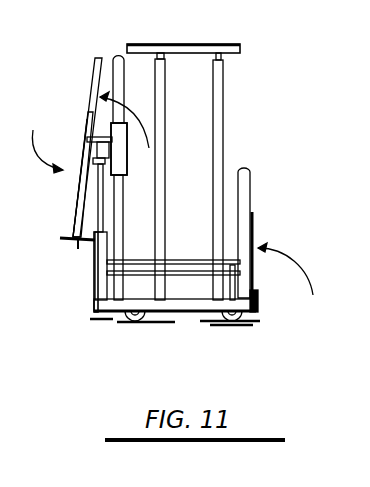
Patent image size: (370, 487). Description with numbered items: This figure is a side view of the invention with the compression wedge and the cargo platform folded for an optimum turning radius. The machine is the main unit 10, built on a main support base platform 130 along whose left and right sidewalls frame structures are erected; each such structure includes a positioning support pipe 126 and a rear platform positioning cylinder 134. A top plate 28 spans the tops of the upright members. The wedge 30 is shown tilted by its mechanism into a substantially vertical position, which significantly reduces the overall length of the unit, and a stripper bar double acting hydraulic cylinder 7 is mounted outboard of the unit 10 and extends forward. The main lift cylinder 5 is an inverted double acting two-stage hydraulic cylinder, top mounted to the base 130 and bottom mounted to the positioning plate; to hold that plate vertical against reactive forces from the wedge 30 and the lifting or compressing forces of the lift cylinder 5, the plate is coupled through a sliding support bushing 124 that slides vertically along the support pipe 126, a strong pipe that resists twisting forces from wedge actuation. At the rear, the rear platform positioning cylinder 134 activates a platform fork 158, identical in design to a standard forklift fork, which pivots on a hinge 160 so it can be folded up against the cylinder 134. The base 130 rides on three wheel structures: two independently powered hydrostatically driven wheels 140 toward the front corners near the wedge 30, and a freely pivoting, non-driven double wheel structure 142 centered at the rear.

The top plate 28 is at (210, 44).
The main unit 10 is at (229, 92).
The positioning support pipe 126 is at (124, 69).
The sliding support bushing 124 is at (127, 160).
The stripper bar double acting hydraulic cylinder 7 is at (96, 82).
The wedge 30 is at (78, 208).
The main lift cylinder 5 is at (100, 272).
The main support base platform 130 is at (188, 311).
The rear platform positioning cylinder 134 is at (252, 196).
The platform fork 158 is at (253, 284).
The hinge 160 is at (256, 311).
The hydrostatically driven wheel 140 is at (136, 323).
The freely pivoting double wheel structure 142 is at (232, 326).